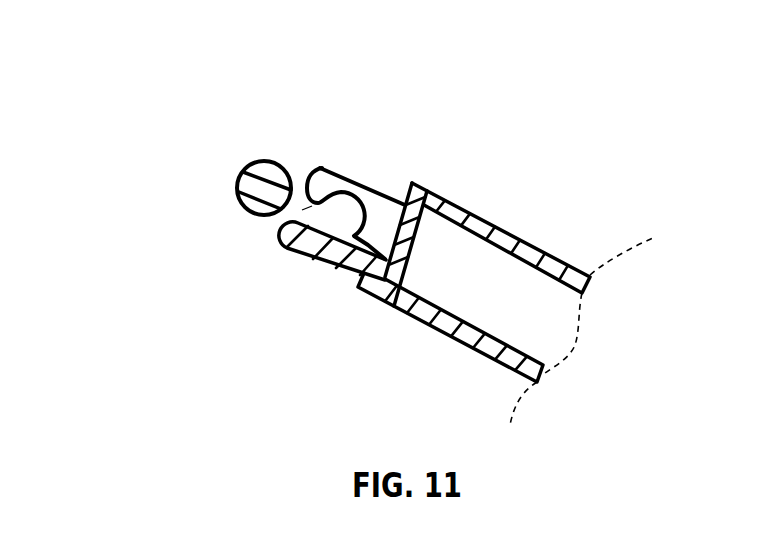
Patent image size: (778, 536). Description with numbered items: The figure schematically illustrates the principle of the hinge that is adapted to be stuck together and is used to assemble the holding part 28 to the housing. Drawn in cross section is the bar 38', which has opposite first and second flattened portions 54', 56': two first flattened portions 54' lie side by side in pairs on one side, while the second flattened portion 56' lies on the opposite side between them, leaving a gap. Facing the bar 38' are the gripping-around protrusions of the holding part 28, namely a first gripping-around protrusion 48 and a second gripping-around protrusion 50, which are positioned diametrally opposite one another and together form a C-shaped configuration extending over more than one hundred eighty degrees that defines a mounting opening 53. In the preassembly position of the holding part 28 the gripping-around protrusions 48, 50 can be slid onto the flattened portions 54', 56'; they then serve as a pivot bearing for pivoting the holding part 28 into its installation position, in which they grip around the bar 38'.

The holding part 28 is at (558, 219).
The first gripping-around protrusion 48 is at (337, 178).
The second gripping-around protrusion 50 is at (340, 262).
The bar 38' is at (222, 138).
The first flattened portion 54' is at (268, 108).
The second flattened portion 56' is at (177, 220).
The mounting opening 53 is at (302, 210).